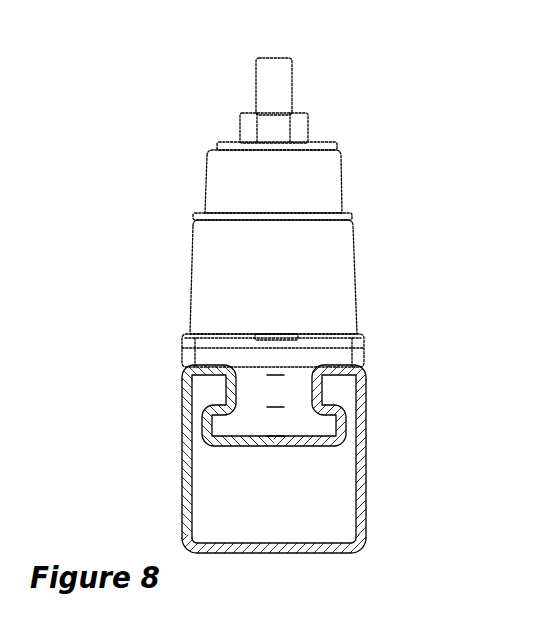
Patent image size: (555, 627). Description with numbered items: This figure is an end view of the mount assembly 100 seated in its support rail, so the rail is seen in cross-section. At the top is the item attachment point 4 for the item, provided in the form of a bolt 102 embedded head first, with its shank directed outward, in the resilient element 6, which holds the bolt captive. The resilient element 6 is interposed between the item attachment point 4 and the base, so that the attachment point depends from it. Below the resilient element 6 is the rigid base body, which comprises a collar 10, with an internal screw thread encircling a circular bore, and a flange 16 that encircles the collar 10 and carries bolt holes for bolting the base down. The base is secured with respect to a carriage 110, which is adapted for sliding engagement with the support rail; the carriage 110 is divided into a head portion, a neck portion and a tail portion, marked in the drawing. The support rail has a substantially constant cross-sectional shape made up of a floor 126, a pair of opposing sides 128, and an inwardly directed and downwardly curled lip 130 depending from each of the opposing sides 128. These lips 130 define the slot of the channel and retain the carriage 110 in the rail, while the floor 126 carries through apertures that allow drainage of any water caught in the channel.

The mount assembly 100 is at (394, 104).
The item attachment point 4 is at (294, 63).
The bolt 102 is at (267, 85).
The resilient element 6 is at (345, 185).
The collar 10 is at (342, 271).
The flange 16 is at (366, 341).
The carriage 110 is at (370, 352).
The inwardly directed and downwardly curled lip 130 is at (362, 375).
The opposing sides 128 is at (182, 477).
The floor 126 is at (315, 553).